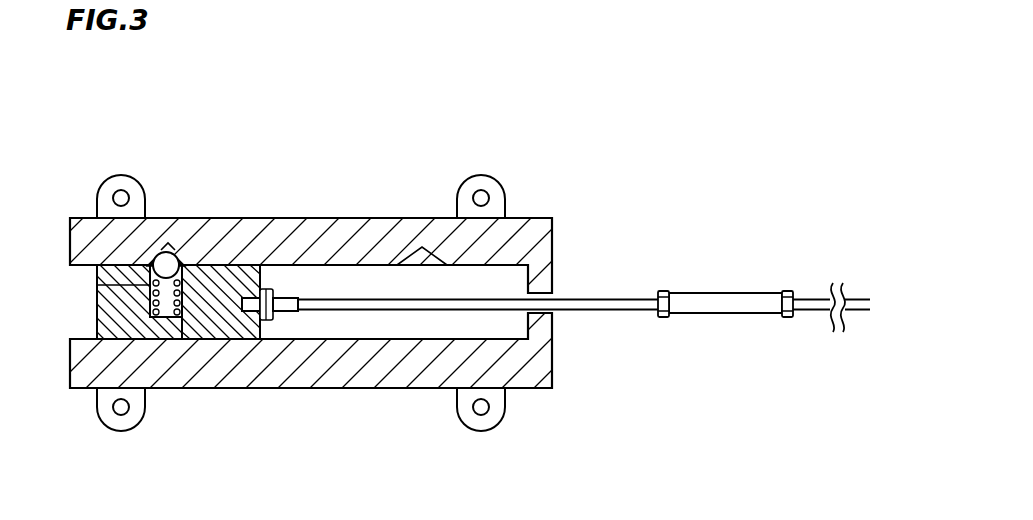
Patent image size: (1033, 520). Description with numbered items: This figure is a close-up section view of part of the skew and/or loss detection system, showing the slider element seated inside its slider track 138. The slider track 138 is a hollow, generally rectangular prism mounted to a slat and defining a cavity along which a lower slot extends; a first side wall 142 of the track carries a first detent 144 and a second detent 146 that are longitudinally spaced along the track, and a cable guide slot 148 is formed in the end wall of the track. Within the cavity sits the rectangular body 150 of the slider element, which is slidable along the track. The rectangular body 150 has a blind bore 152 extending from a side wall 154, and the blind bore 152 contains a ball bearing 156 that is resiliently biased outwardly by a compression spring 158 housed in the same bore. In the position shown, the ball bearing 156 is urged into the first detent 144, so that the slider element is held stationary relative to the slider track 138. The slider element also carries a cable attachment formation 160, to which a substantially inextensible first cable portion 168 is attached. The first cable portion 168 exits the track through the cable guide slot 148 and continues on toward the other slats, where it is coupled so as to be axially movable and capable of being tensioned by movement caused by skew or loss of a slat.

The slider track 138 is at (331, 270).
The first side wall 142 is at (331, 219).
The first detent 144 is at (177, 257).
The second detent 146 is at (414, 252).
The cable guide slot 148 is at (551, 293).
The rectangular body 150 is at (164, 309).
The blind bore 152 is at (152, 302).
The side wall 154 is at (228, 265).
The ball bearing 156 is at (163, 262).
The compression spring 158 is at (157, 312).
The cable attachment formation 160 is at (272, 322).
The first cable portion 168 is at (593, 308).